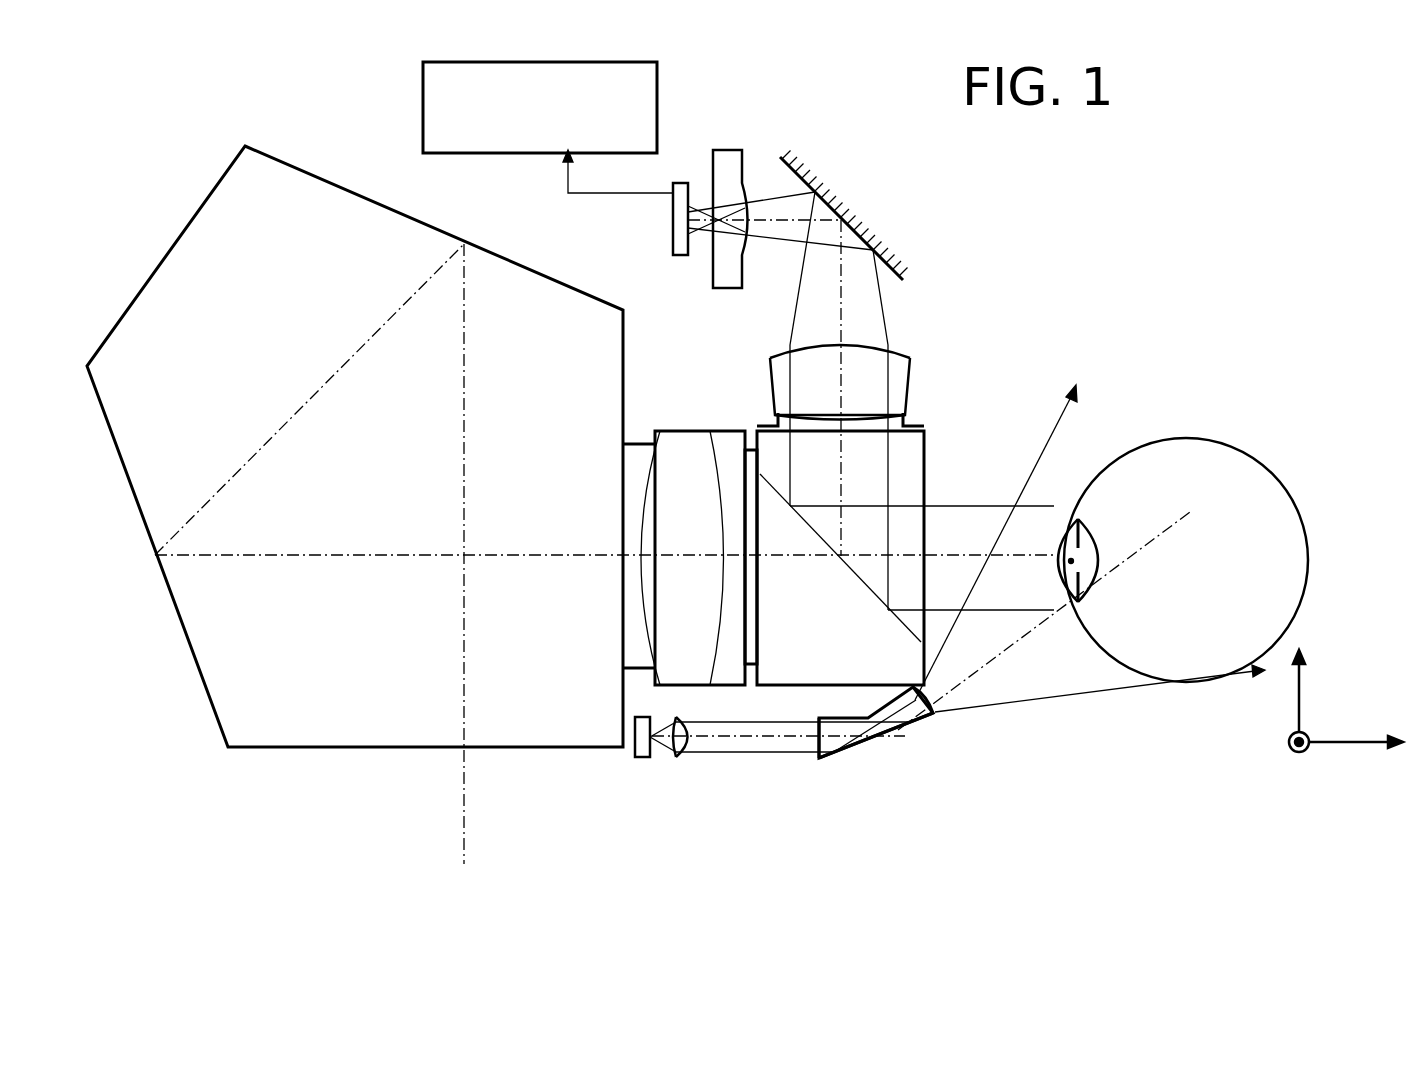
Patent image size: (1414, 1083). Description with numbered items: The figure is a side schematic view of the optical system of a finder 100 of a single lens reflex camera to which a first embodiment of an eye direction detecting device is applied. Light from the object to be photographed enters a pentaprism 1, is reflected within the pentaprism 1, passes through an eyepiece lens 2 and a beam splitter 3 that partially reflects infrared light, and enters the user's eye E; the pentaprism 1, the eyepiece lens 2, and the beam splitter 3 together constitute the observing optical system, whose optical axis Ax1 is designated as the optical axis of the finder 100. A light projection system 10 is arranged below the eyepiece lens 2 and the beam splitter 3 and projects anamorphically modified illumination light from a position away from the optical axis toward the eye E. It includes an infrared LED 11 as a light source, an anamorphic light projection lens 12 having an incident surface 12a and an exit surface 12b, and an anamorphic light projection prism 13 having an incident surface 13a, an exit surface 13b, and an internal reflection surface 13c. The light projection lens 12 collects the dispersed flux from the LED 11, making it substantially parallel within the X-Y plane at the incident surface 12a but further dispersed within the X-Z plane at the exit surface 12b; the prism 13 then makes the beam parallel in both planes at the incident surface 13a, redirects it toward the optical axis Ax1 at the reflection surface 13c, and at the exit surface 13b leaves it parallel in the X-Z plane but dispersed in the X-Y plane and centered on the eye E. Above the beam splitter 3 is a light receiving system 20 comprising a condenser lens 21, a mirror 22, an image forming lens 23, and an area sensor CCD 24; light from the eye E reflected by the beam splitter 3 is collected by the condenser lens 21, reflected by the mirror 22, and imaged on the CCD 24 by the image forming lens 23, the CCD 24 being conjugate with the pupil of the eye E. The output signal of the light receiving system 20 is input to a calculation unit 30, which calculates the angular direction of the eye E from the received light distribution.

The pentaprism 1 is at (305, 172).
The eyepiece lens 2 is at (683, 440).
The beam splitter 3 is at (914, 478).
The light projection system 10 is at (797, 778).
The infrared LED 11 is at (633, 753).
The anamorphic light projection lens 12 is at (690, 775).
The incident surface 12a is at (673, 748).
The exit surface 12b is at (688, 742).
The anamorphic light projection prism 13 is at (905, 758).
The incident surface 13a is at (817, 745).
The exit surface 13b is at (936, 702).
The internal reflection surface 13c is at (855, 755).
The light receiving system 20 is at (763, 259).
The condenser lens 21 is at (905, 385).
The mirror 22 is at (860, 222).
The image forming lens 23 is at (728, 150).
The area sensor (CCD) 24 is at (673, 232).
The calculation unit 30 is at (423, 92).
The finder 100 is at (745, 465).
The eye E is at (1250, 448).
The optical axis Ax1 is at (1000, 560).